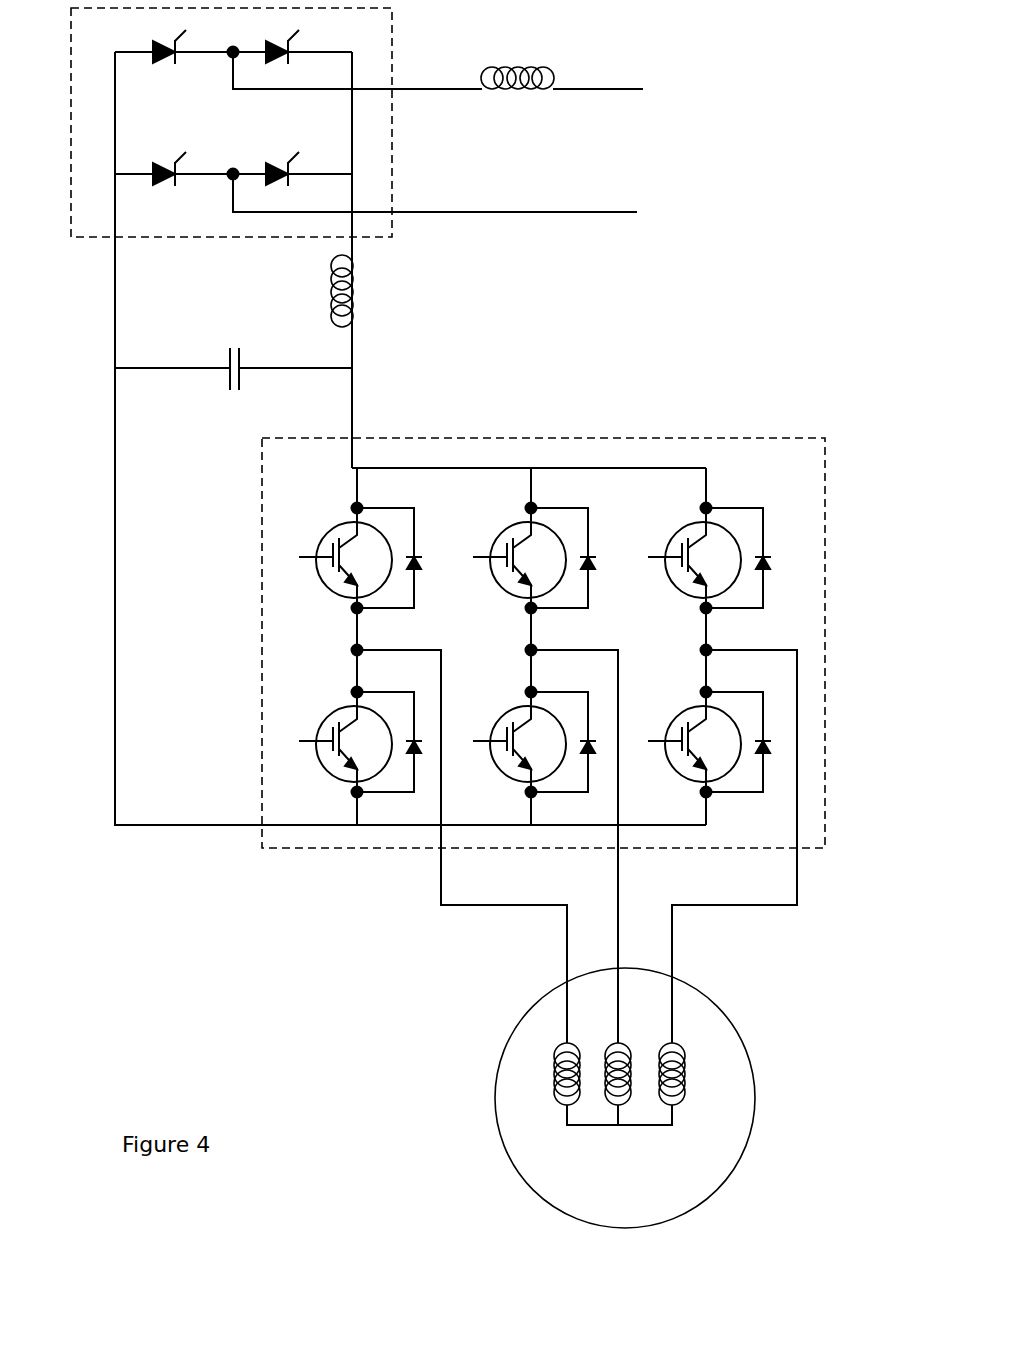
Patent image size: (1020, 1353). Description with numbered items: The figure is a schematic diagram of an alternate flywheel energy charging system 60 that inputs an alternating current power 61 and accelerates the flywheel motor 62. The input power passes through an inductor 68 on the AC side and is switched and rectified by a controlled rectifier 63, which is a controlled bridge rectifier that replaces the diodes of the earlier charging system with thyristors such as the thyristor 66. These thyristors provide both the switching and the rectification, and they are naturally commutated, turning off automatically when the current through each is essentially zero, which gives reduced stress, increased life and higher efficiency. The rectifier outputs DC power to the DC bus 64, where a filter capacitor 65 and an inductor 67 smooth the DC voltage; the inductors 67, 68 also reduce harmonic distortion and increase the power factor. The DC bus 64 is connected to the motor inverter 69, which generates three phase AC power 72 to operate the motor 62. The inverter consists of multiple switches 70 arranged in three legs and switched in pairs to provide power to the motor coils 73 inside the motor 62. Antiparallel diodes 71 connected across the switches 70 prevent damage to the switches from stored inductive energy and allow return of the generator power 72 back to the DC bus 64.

The charging system 60 is at (194, 966).
The alternating current power 61 is at (713, 162).
The flywheel motor 62 is at (750, 1057).
The controlled rectifier 63 is at (393, 232).
The DC bus 64 is at (202, 307).
The filter capacitor 65 is at (230, 388).
The thyristor 66 is at (281, 167).
The inductor 67 is at (352, 303).
The inductor 68 is at (520, 90).
The motor inverter 69 is at (572, 613).
The switches 70 is at (683, 523).
The antiparallel diodes 71 is at (763, 537).
The three phase AC power 72 is at (655, 920).
The motor coils 73 is at (548, 1065).